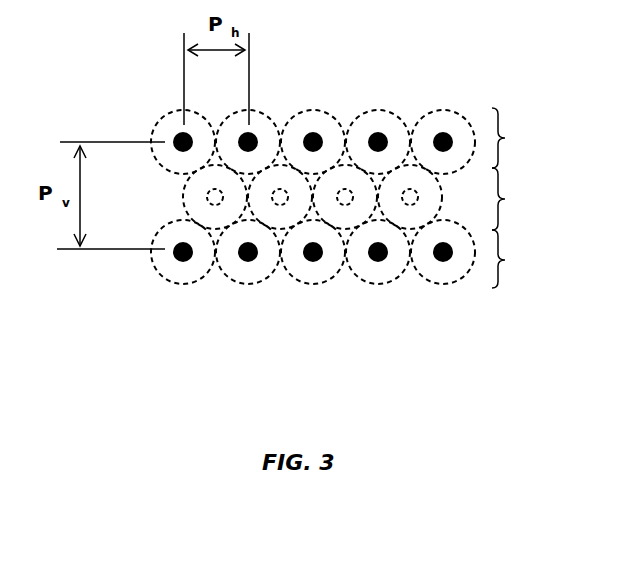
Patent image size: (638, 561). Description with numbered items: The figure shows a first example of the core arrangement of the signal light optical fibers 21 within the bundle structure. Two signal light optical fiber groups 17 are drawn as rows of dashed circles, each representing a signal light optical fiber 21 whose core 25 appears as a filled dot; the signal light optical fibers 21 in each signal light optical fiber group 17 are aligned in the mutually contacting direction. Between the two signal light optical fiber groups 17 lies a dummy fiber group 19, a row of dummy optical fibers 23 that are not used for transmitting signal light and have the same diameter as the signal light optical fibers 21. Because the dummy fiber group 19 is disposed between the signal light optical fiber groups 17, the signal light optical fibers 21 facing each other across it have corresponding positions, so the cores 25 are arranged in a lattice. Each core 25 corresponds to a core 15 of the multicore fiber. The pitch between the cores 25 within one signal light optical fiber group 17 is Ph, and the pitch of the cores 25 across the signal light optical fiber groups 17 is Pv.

The signal light optical fiber group 17 is at (326, 223).
The dummy fiber group 19 is at (376, 278).
The signal light optical fiber 21 is at (290, 267).
The dummy optical fiber 23 is at (260, 217).
The core 25 is at (148, 318).
The core 15 is at (148, 318).